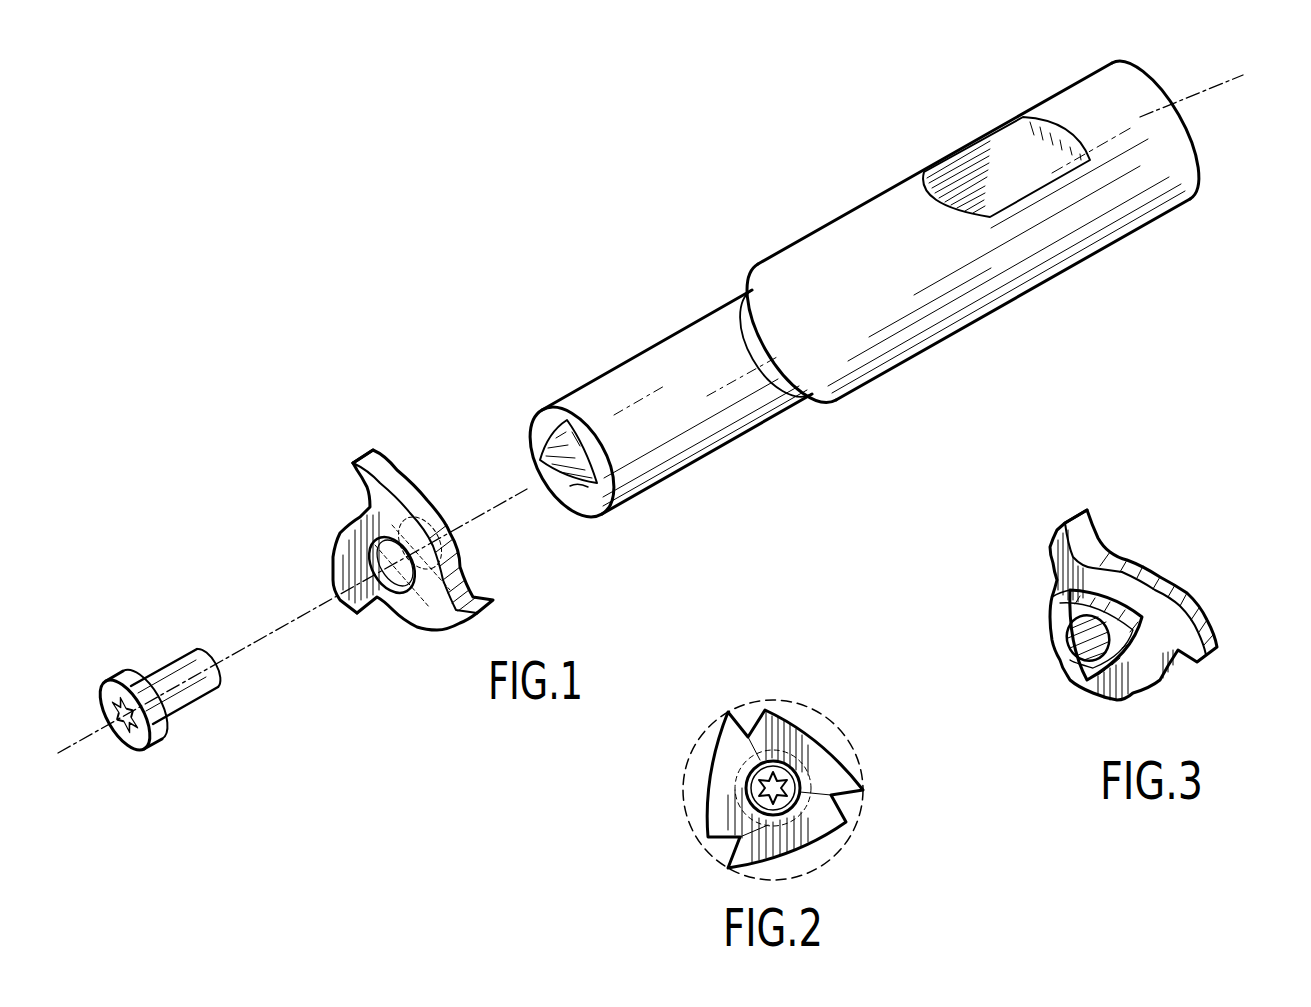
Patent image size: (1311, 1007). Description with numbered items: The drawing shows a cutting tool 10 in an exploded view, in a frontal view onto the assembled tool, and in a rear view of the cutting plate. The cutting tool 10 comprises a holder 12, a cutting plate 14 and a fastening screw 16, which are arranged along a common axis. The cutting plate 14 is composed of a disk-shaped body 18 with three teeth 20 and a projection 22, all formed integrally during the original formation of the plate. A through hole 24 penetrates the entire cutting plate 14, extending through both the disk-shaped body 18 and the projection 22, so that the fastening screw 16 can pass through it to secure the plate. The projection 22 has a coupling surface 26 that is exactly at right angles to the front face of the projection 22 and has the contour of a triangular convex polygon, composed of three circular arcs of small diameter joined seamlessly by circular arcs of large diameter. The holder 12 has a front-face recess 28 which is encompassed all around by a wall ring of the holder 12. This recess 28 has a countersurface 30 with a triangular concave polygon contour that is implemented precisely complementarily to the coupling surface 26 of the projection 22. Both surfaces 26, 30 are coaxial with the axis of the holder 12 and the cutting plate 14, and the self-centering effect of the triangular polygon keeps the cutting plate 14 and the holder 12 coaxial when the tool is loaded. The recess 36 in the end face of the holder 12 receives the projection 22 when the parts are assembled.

In FIG. 1, the cutting tool 10 is at (619, 562).
In FIG. 2, the cutting tool 10 is at (812, 726).
In FIG. 1, the holder 12 is at (717, 450).
In FIG. 2, the holder 12 is at (828, 780).
In FIG. 1, the cutting plate 14 is at (417, 613).
In FIG. 2, the cutting plate 14 is at (713, 827).
In FIG. 3, the cutting plate 14 is at (1142, 558).
In FIG. 1, the fastening screw 16 is at (197, 703).
In FIG. 2, the fastening screw 16 is at (783, 803).
In FIG. 3, the disk-shaped body 18 is at (1160, 577).
In FIG. 1, the teeth 20 is at (375, 462).
In FIG. 3, the teeth 20 is at (1060, 533).
In FIG. 1, the projection 22 is at (465, 557).
In FIG. 3, the projection 22 is at (1058, 615).
In FIG. 1, the through hole 24 is at (378, 560).
In FIG. 3, the through hole 24 is at (1083, 640).
In FIG. 3, the coupling surface 26 is at (1130, 693).
In FIG. 1, the front-face recess 28 is at (543, 435).
In FIG. 1, the countersurface 30 is at (583, 490).
In FIG. 1, the recess 36 is at (560, 441).